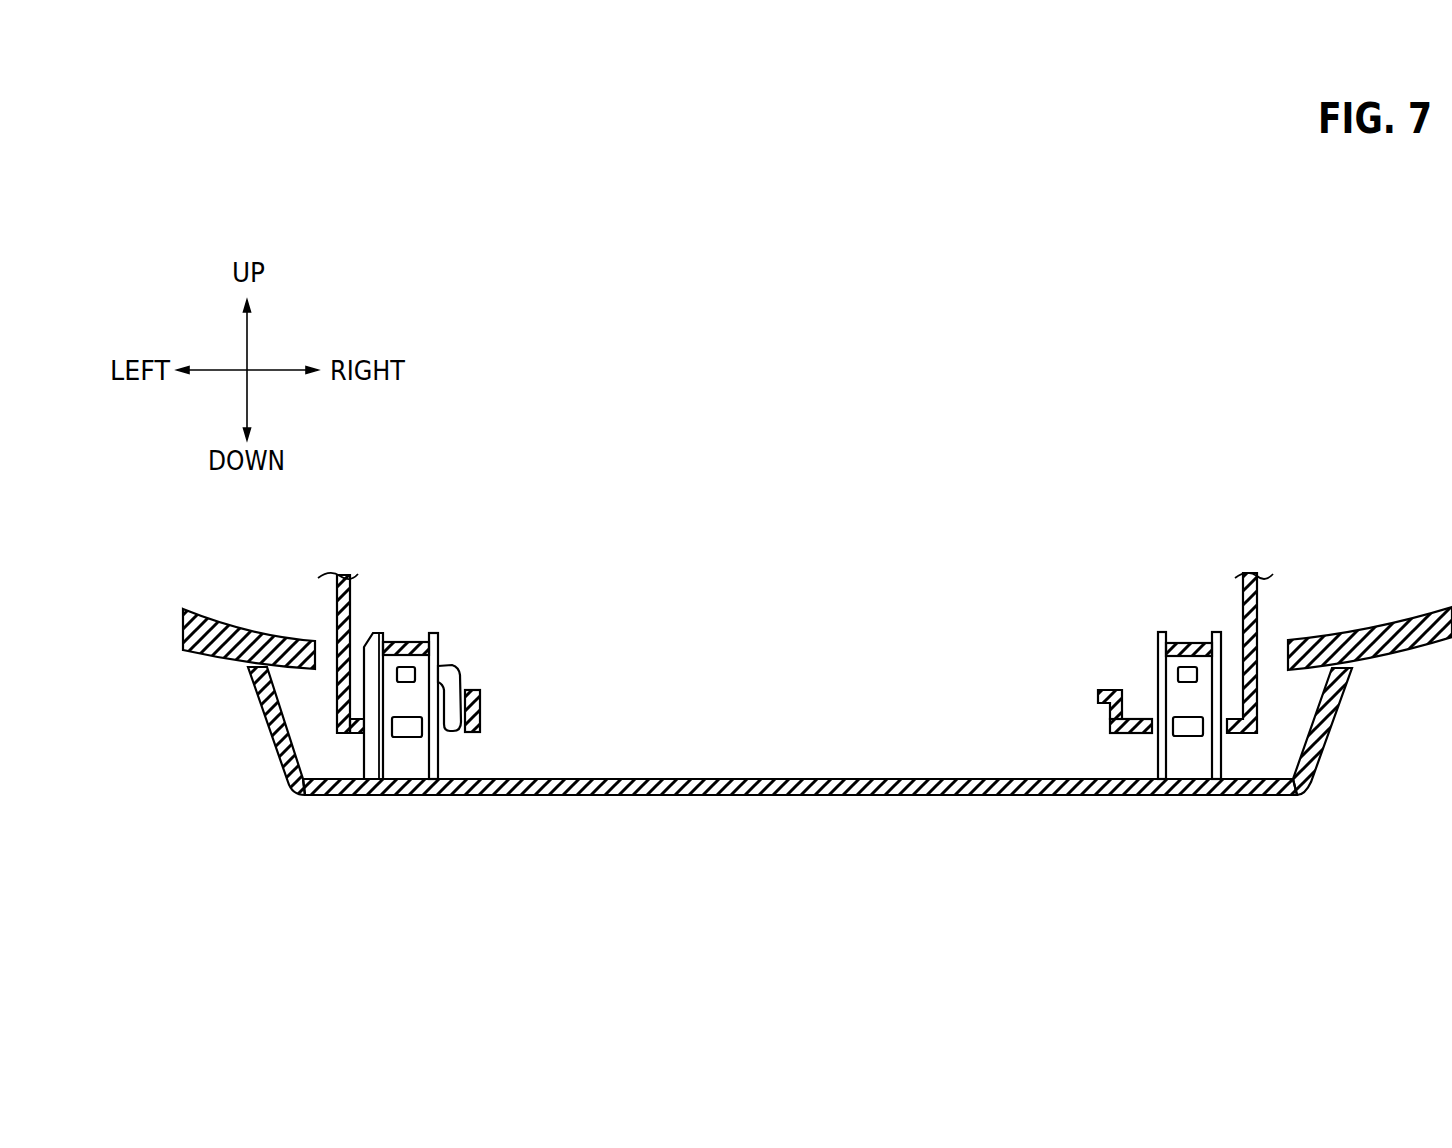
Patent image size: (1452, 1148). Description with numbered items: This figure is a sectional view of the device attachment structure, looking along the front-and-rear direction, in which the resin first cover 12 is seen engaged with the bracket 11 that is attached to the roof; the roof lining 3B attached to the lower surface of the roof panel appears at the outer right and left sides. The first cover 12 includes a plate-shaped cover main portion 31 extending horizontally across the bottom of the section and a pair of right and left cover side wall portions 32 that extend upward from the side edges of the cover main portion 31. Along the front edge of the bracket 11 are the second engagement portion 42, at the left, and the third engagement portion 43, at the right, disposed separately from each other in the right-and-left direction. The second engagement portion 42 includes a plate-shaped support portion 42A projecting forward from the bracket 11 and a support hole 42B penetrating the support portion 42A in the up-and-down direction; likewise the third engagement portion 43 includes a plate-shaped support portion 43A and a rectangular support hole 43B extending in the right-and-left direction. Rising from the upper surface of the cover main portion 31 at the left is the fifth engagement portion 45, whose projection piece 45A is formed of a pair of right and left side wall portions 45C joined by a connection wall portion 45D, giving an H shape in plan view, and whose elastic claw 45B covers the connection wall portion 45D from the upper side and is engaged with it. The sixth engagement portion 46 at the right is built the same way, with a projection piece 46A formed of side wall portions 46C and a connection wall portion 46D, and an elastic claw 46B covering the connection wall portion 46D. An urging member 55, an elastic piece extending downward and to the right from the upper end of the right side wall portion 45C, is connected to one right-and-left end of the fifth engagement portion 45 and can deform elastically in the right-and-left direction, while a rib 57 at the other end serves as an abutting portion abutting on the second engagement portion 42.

The roof lining 3B is at (213, 620).
The bracket 11 is at (330, 565).
The first cover 12 is at (783, 765).
The cover main portion 31 is at (897, 780).
The cover side wall portion 32 is at (267, 712).
The second engagement portion 42 is at (338, 743).
The support portion 42A is at (482, 713).
The support hole 42B is at (368, 722).
The third engagement portion 43 is at (1118, 743).
The support portion 43A is at (1243, 735).
The support hole 43B is at (1152, 724).
The fifth engagement portion 45 is at (435, 711).
The projection piece 45A is at (441, 640).
The elastic claw 45B is at (399, 636).
The side wall portion 45C is at (375, 758).
The connection wall portion 45D is at (420, 760).
The sixth engagement portion 46 is at (1125, 680).
The projection piece 46A is at (1155, 645).
The elastic claw 46B is at (1203, 642).
The side wall portion 46C is at (1218, 663).
The connection wall portion 46D is at (1192, 755).
The urging member 55 is at (455, 667).
The rib 57 is at (366, 642).